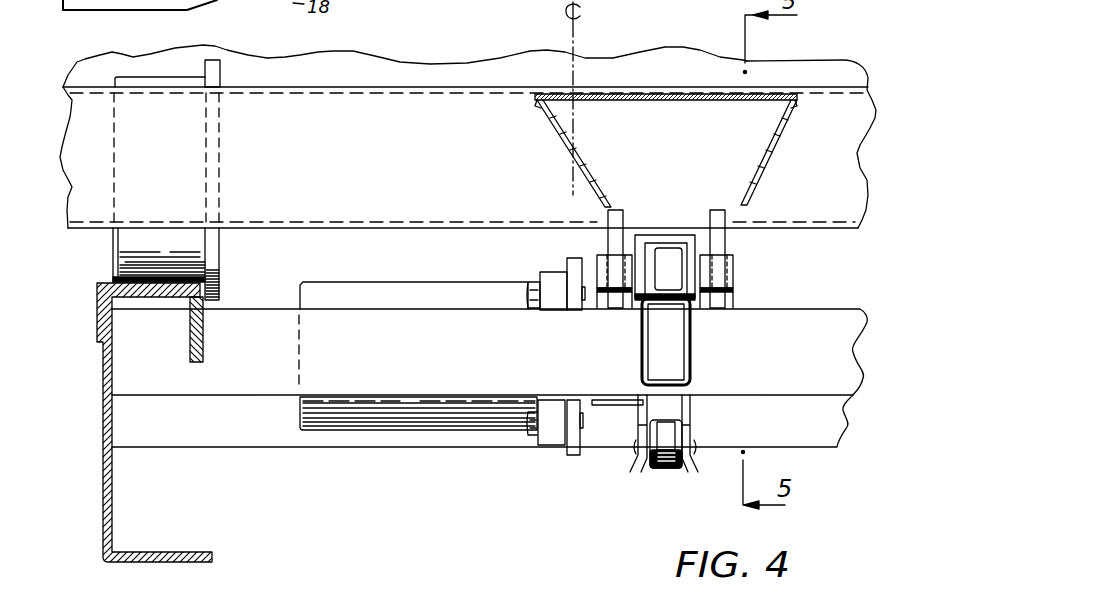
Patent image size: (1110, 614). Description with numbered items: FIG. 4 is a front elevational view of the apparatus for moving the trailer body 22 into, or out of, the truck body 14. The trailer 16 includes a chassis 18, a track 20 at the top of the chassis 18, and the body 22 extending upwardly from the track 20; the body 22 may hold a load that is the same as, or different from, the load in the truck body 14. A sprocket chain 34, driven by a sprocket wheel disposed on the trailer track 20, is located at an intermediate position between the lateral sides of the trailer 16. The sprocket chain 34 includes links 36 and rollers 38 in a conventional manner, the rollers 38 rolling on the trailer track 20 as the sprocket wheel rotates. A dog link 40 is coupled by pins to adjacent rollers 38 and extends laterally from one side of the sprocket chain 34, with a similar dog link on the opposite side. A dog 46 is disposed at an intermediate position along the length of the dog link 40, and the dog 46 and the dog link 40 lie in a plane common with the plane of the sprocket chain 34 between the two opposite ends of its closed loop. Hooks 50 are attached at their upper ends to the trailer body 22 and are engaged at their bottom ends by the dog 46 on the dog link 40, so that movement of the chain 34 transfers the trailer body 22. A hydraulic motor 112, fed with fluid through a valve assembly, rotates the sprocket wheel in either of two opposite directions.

The truck body 14 is at (468, 60).
The trailer 16 is at (330, 347).
The trailer chassis 18 is at (102, 527).
The trailer track 20 is at (692, 342).
The trailer body 22 is at (815, 63).
The sprocket chain 34 is at (645, 450).
The links 36 is at (694, 466).
The rollers 38 is at (668, 258).
The dog link 40 is at (697, 242).
The dog 46 is at (600, 278).
The hooks 50 is at (740, 160).
The hydraulic motor 112 is at (355, 288).